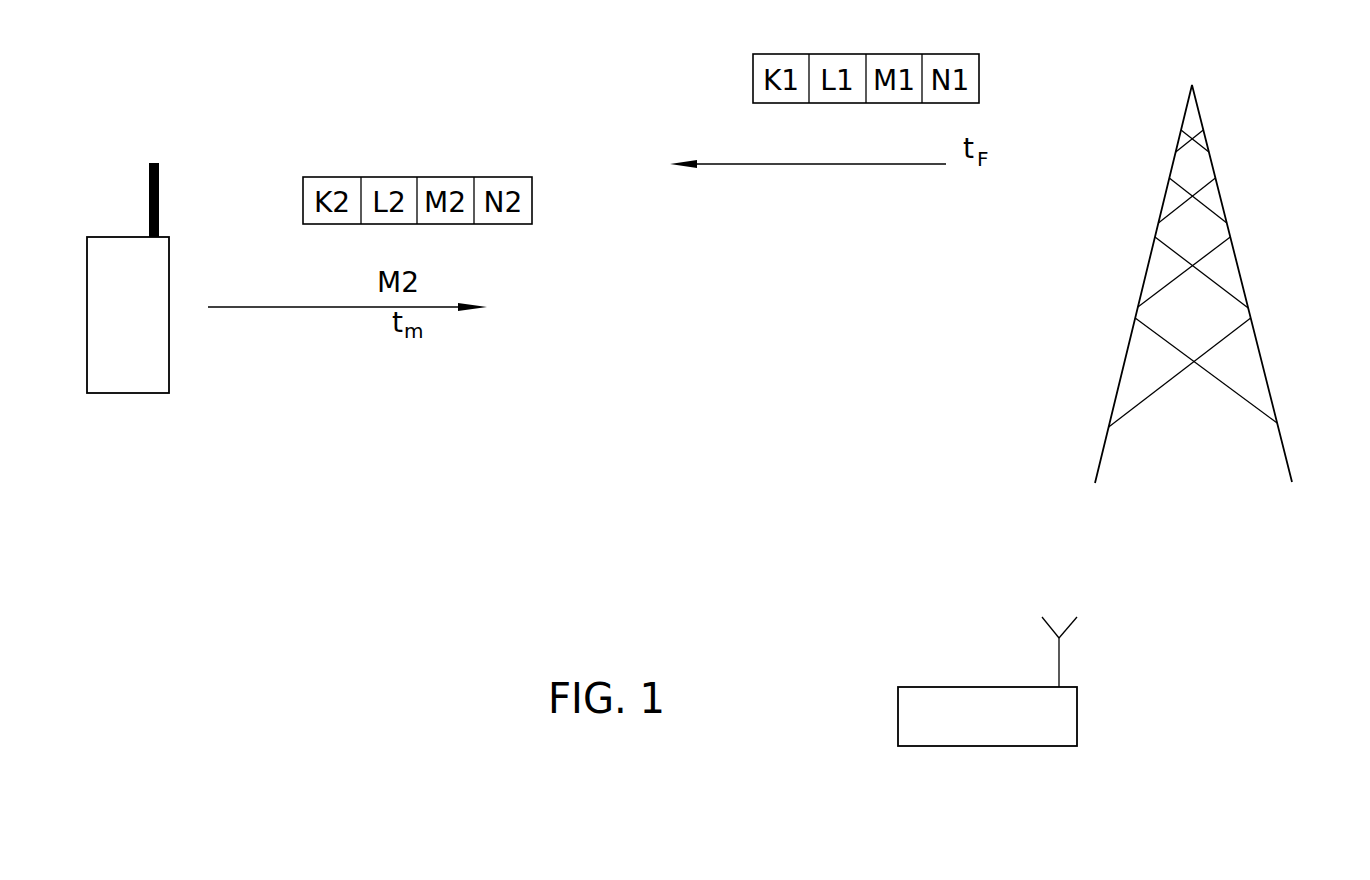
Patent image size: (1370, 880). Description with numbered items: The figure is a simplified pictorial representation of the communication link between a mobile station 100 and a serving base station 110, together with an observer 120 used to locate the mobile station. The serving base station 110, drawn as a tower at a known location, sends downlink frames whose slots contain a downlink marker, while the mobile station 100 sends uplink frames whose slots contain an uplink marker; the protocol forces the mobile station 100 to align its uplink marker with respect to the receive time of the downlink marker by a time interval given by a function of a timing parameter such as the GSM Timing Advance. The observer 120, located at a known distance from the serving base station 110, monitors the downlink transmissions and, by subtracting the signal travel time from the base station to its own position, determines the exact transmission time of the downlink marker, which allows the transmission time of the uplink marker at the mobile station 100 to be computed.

The mobile station 100 is at (128, 300).
The serving base station 110 is at (1216, 284).
The observer 120 is at (987, 700).